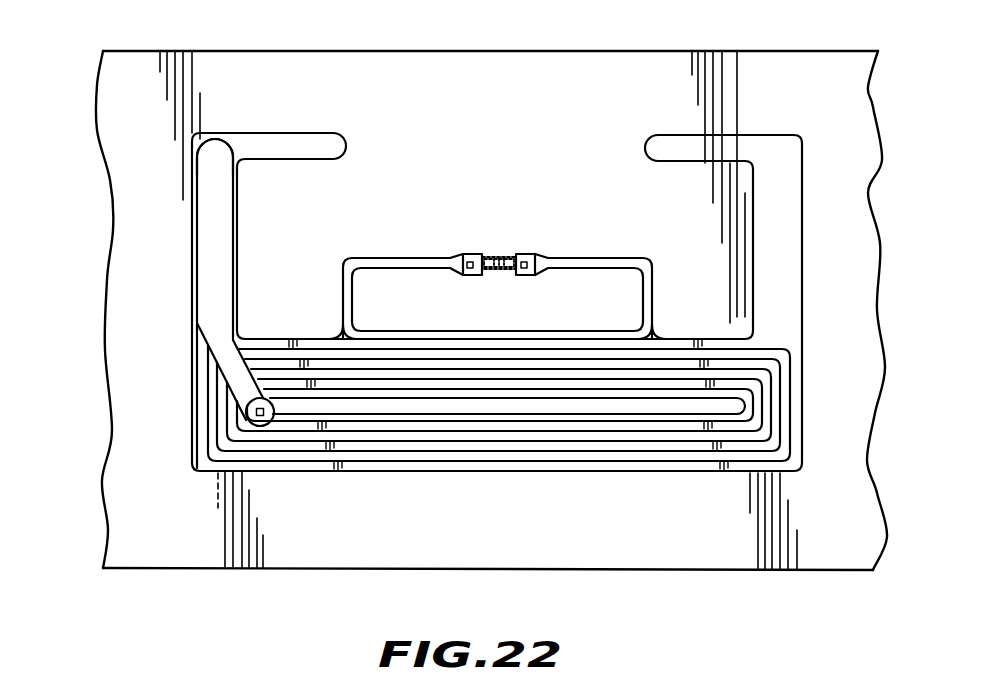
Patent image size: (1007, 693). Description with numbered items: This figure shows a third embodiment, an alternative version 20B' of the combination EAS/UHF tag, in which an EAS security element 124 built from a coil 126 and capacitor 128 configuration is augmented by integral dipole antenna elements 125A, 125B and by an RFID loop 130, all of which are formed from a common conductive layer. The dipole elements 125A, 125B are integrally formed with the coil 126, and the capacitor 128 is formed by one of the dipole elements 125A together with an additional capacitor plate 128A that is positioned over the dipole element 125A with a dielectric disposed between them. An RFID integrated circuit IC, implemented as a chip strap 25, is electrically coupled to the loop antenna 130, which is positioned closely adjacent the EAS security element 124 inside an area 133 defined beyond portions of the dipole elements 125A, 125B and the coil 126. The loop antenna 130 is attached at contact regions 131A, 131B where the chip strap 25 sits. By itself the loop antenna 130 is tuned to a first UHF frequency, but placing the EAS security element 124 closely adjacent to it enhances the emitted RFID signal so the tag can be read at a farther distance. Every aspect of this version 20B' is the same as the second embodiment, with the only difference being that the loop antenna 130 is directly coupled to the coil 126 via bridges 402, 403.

The combination EAS/UHF tag 20B' is at (491, 285).
The EAS security element 124 is at (172, 467).
The dipole antenna element 125A is at (292, 143).
The dipole antenna element 125B is at (682, 146).
The coil 126 is at (668, 470).
The capacitor 128 is at (190, 258).
The capacitor plate 128A is at (218, 252).
The loop antenna 130 is at (648, 268).
The first contact pad 131A is at (462, 254).
The second contact pad 131B is at (585, 225).
The area 133 is at (702, 324).
The chip strap 25 is at (508, 248).
The RFID integrated circuit IC is at (462, 255).
The bridge 402 is at (337, 329).
The bridge 403 is at (663, 330).